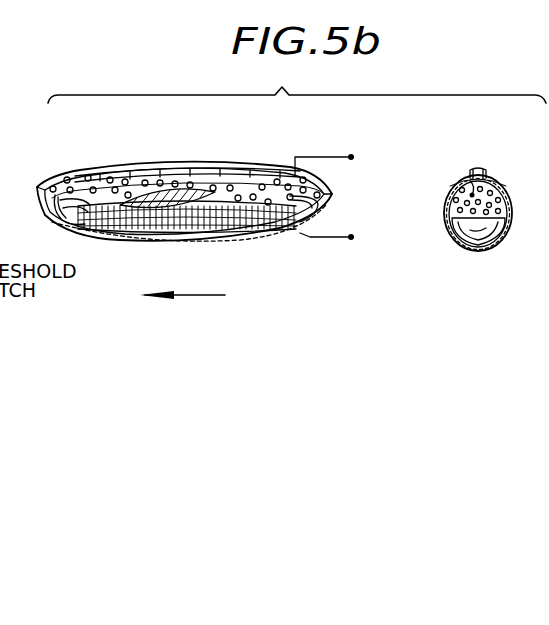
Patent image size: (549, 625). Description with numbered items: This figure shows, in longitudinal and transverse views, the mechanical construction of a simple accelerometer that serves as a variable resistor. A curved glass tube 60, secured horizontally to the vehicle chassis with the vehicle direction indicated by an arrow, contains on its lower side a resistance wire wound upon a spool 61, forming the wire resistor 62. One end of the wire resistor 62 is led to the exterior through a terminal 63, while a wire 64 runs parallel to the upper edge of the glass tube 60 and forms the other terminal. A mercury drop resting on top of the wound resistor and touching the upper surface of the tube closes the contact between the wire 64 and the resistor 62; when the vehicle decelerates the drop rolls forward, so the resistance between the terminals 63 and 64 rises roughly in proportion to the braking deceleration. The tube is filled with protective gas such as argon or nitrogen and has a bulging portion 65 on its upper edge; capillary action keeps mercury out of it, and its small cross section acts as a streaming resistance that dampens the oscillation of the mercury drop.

The curved glass tube 60 is at (106, 238).
The spool 61 is at (55, 205).
The wire resistor 62 is at (196, 224).
The terminal 63 is at (326, 237).
The wire 64 is at (334, 157).
The bulging portion 65 is at (130, 168).